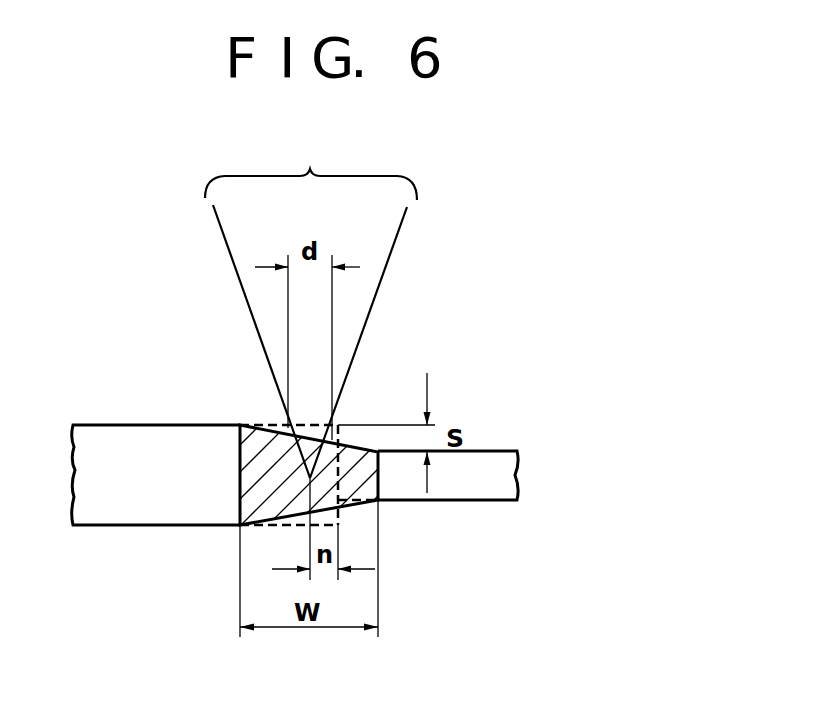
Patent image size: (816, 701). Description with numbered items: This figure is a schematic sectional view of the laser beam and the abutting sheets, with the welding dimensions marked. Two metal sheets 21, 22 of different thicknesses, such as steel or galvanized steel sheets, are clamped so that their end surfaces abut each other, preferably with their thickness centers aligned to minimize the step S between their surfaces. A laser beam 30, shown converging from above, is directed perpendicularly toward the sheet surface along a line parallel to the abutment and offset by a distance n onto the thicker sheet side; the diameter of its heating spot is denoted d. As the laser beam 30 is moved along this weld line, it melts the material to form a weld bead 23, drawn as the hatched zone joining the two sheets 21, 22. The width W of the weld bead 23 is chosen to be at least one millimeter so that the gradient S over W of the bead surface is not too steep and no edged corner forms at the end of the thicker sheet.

The metal sheet 21 is at (125, 453).
The metal sheet 22 is at (478, 477).
The weld bead 23 is at (260, 457).
The laser beam 30 is at (311, 305).